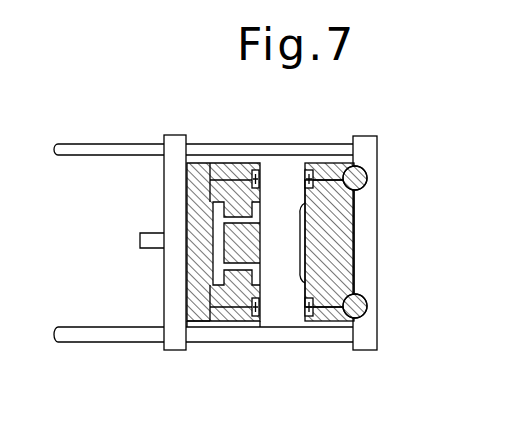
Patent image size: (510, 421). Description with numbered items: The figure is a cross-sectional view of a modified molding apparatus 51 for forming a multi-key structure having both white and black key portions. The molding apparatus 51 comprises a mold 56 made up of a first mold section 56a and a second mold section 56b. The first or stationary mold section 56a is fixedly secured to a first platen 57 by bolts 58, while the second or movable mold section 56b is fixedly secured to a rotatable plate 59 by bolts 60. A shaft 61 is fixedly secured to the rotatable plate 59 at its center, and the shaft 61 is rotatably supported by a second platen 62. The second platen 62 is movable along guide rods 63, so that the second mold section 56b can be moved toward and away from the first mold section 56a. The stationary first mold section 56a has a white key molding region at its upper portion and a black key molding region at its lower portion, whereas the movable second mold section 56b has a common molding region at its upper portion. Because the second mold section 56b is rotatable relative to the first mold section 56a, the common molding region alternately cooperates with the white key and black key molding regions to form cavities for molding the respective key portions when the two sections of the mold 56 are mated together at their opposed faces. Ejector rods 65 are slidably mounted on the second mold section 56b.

The molding apparatus 51 is at (289, 142).
The mold 56 is at (313, 163).
The first mold section 56a is at (347, 252).
The second mold section 56b is at (238, 328).
The first platen 57 is at (378, 213).
The bolts 58 is at (349, 168).
The rotatable plate 59 is at (193, 322).
The bolts 60 is at (232, 180).
The shaft 61 is at (142, 238).
The second platen 62 is at (172, 292).
The guide rods 63 is at (118, 147).
The ejector rods 65 is at (254, 218).